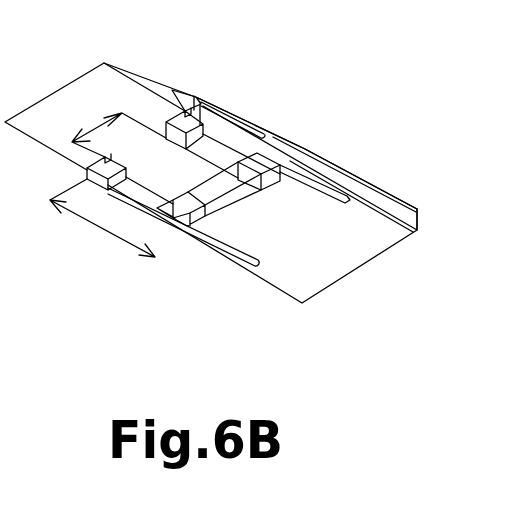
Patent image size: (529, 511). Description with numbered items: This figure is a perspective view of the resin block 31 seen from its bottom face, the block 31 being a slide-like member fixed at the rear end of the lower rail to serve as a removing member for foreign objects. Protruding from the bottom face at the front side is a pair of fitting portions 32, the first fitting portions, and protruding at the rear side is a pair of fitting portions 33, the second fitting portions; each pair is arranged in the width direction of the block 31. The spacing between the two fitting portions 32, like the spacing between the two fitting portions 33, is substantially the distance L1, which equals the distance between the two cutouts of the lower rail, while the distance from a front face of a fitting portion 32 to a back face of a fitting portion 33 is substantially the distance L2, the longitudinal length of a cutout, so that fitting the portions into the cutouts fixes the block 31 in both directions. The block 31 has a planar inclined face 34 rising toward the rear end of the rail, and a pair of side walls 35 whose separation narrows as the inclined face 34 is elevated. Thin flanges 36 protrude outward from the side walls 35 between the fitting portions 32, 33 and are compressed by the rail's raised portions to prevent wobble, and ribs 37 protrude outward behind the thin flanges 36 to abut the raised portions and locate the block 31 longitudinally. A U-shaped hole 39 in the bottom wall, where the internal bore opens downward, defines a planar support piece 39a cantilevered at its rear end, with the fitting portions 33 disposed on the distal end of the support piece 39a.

The block 31 is at (358, 71).
The fitting portions 32 is at (87, 178).
The fitting portions 33 is at (258, 188).
The inclined face 34 is at (218, 122).
The side walls 35 is at (282, 130).
The thin flanges 36 is at (275, 135).
The ribs 37 is at (348, 177).
The hole 39 is at (262, 131).
The support piece 39a is at (242, 237).
The distance L1 is at (100, 128).
The distance L2 is at (107, 231).